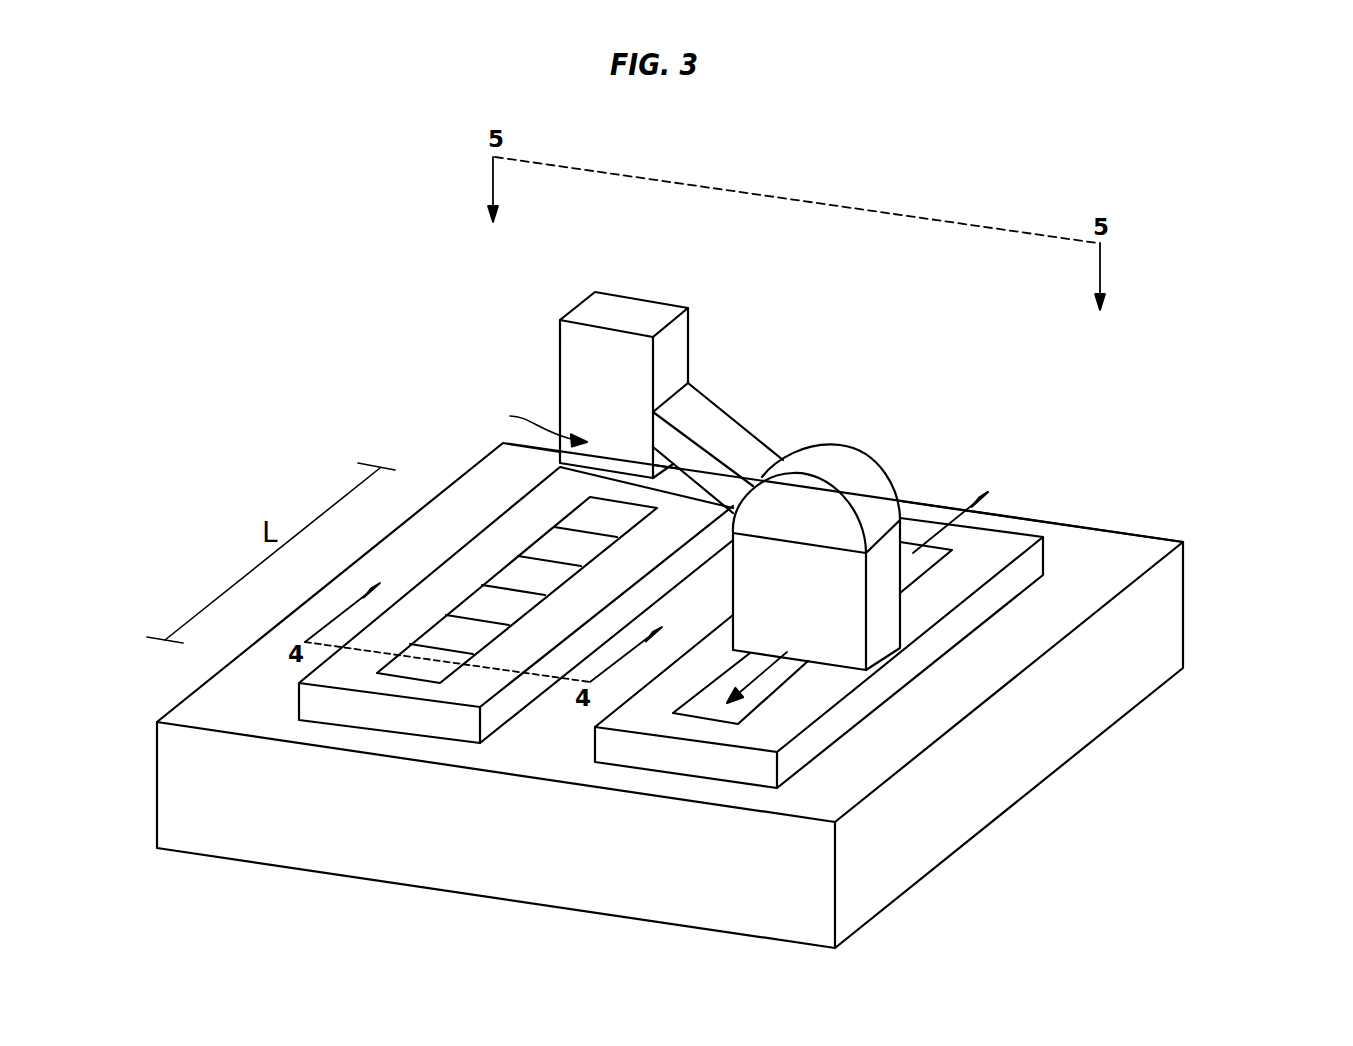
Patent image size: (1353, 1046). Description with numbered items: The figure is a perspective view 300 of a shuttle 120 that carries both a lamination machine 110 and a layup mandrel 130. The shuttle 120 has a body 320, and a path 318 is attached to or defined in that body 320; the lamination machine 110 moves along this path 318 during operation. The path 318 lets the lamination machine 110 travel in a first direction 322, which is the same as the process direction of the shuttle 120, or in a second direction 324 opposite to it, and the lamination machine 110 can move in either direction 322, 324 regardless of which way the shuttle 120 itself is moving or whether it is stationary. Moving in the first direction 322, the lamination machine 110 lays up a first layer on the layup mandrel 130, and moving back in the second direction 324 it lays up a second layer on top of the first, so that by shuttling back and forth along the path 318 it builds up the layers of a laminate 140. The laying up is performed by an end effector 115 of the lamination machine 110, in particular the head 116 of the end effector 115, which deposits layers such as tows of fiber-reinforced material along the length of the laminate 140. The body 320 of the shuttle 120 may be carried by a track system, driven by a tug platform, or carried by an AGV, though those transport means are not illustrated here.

The system 300 is at (308, 286).
The lamination machine 110 is at (860, 453).
The end effector 115 is at (648, 298).
The head 116 is at (531, 426).
The shuttle 120 is at (1098, 838).
The layup mandrel 130 is at (298, 705).
The laminate 140 is at (502, 568).
The path 318 is at (933, 570).
The body 320 is at (1183, 574).
The first direction 322 is at (960, 515).
The second direction 324 is at (757, 677).